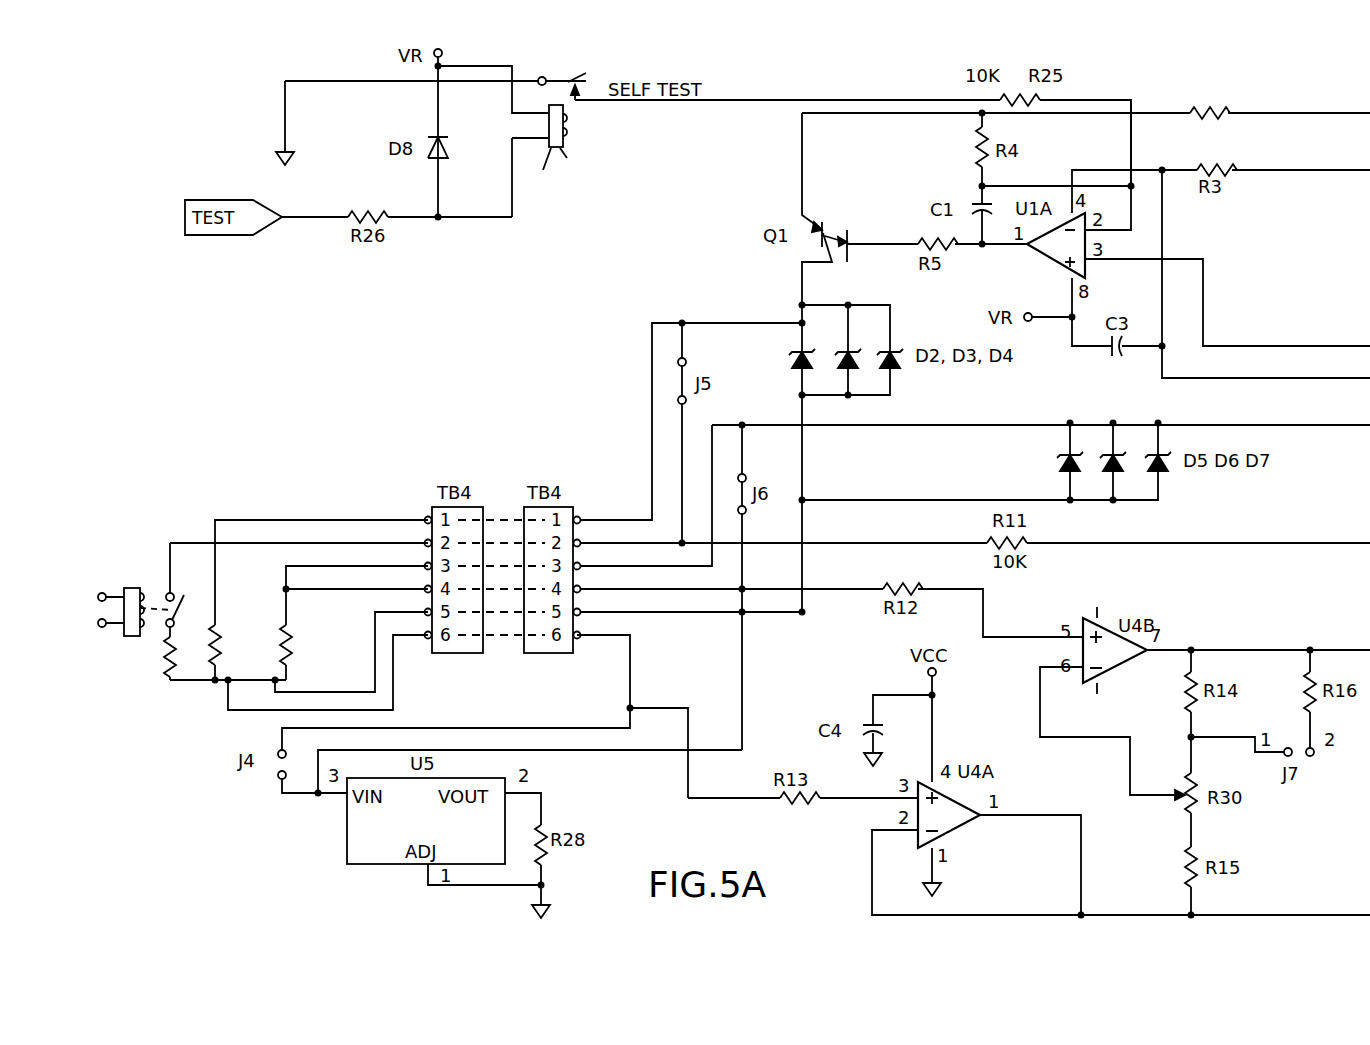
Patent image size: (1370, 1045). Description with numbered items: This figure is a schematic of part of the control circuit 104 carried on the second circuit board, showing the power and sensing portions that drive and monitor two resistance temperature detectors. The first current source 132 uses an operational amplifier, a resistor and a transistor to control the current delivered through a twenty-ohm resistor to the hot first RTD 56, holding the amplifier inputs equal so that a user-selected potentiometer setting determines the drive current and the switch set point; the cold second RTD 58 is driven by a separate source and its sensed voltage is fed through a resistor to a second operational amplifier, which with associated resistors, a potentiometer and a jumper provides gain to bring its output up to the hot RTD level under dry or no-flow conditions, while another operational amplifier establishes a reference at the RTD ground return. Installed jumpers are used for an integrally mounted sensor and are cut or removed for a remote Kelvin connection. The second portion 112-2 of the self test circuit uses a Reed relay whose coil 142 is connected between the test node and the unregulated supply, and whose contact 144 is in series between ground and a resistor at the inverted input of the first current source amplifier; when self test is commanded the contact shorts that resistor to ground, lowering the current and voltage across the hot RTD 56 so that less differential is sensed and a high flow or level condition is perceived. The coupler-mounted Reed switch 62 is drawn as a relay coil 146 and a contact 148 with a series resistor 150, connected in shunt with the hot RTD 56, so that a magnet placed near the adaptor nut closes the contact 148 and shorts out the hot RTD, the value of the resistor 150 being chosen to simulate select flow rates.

The first RTD 56 is at (210, 652).
The second RTD 58 is at (290, 662).
The Reed switch 62 is at (255, 609).
The control circuit 104 is at (1258, 100).
The second portion of the self test circuit 112-2 is at (588, 124).
The first current source 132 is at (1150, 100).
The coil 142 is at (545, 149).
The contact 144 is at (586, 73).
The relay coil 146 is at (132, 636).
The contact 148 is at (182, 594).
The resistor 150 is at (167, 668).